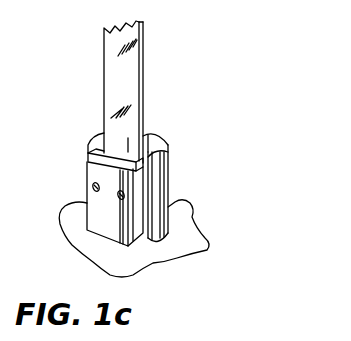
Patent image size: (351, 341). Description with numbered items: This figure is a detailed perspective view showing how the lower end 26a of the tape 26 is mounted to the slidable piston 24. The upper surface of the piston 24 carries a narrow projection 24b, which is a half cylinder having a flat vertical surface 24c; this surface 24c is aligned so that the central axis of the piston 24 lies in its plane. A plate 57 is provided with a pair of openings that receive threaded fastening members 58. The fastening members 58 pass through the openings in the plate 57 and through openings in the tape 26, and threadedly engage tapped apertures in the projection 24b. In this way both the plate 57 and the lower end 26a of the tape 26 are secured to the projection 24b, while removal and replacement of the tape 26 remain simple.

The piston 24 is at (67, 233).
The narrow projection 24b is at (148, 135).
The flat vertical surface 24c is at (152, 182).
The tape 26 is at (112, 63).
The end of tape 26a is at (118, 145).
The plate 57 is at (97, 167).
The threaded fastening members 58 is at (117, 196).